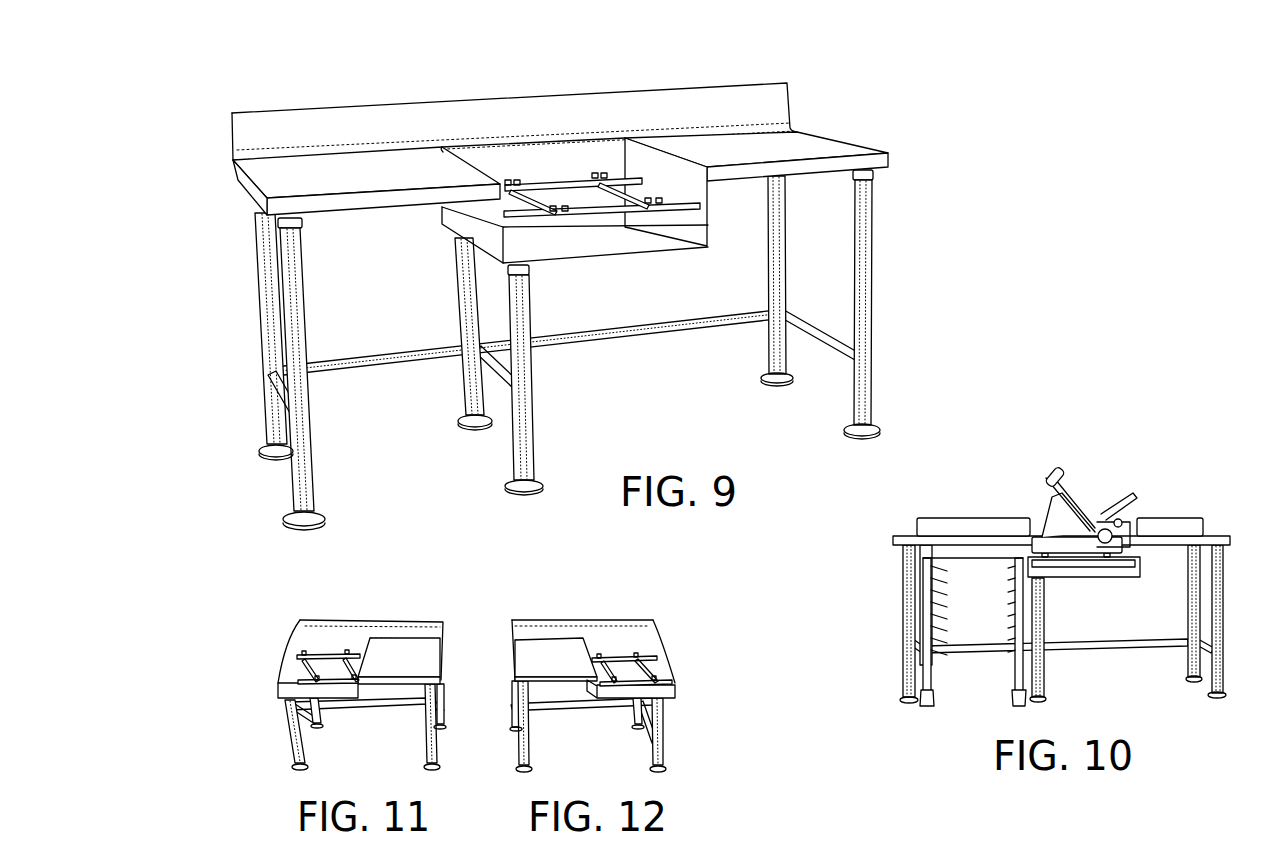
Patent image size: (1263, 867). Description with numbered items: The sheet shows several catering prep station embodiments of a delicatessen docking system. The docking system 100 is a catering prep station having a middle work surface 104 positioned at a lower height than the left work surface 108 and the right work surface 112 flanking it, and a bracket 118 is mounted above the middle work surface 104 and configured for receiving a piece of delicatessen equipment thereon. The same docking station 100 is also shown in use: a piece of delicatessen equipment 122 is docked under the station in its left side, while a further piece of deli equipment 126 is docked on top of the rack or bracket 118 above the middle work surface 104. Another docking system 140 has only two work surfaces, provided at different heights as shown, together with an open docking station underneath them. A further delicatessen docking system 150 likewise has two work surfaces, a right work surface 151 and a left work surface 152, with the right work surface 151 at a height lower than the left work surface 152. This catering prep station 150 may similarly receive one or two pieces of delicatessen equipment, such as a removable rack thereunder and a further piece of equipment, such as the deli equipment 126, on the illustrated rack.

In FIG. 9, the docking system 100 is at (605, 282).
In FIG. 10, the docking system 100 is at (1023, 600).
In FIG. 9, the middle work surface 104 is at (588, 237).
In FIG. 9, the left work surface 108 is at (358, 177).
In FIG. 9, the right work surface 112 is at (808, 148).
In FIG. 9, the bracket 118 is at (567, 193).
In FIG. 10, the piece of delicatessen equipment 122 is at (925, 700).
In FIG. 10, the piece of deli equipment 126 is at (1110, 508).
In FIG. 11, the docking system 140 is at (270, 655).
In FIG. 12, the delicatessen docking system 150 is at (641, 677).
In FIG. 12, the right work surface 151 is at (590, 688).
In FIG. 12, the left work surface 152 is at (543, 652).